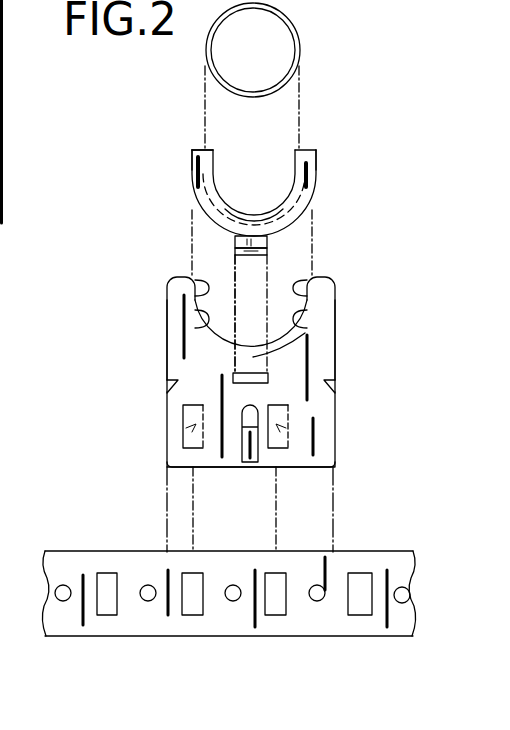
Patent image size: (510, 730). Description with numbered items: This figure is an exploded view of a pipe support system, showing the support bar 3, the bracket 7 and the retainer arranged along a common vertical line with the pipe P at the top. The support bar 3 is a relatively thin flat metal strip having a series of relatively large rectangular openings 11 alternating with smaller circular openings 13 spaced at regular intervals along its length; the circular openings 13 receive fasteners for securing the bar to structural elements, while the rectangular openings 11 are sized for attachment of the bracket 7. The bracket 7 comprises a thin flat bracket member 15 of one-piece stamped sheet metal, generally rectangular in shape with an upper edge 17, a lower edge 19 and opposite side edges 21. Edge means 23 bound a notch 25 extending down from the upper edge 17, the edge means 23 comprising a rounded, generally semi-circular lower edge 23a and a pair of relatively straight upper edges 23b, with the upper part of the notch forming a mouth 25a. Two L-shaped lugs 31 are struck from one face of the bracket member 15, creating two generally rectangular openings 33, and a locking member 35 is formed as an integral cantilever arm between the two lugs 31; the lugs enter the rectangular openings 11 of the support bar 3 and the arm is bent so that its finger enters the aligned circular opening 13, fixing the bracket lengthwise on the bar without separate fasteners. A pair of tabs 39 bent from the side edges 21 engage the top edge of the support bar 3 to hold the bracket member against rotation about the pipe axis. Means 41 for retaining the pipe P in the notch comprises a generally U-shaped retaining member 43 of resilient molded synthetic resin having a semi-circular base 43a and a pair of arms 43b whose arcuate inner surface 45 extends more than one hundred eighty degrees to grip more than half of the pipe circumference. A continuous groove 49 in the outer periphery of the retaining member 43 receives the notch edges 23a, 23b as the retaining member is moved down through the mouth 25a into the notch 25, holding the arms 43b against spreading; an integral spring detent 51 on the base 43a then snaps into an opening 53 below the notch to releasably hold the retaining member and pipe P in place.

The pipe P is at (297, 40).
The support bar 3 is at (234, 586).
The bracket 7 is at (247, 383).
The rectangular opening 11 is at (107, 590).
The circular opening 13 is at (66, 588).
The bracket member 15 is at (335, 397).
The upper edge 17 is at (180, 277).
The lower edge 19 is at (310, 470).
The side edge 21 is at (167, 322).
The edge means 23 is at (205, 316).
The lower edge 23a is at (307, 326).
The upper edge 23b is at (196, 290).
The notch 25 is at (290, 294).
The mouth 25a is at (250, 288).
The L-shaped lug 31 is at (185, 410).
The rectangular opening 33 is at (190, 428).
The locking member 35 is at (245, 455).
The tab 39 is at (167, 376).
The retaining means 41 is at (245, 176).
The retaining member 43 is at (316, 192).
The base 43a is at (231, 226).
The arm 43b is at (192, 166).
The arcuate inner surface 45 is at (214, 150).
The groove 49 is at (310, 226).
The spring detent 51 is at (268, 243).
The opening 53 is at (235, 378).